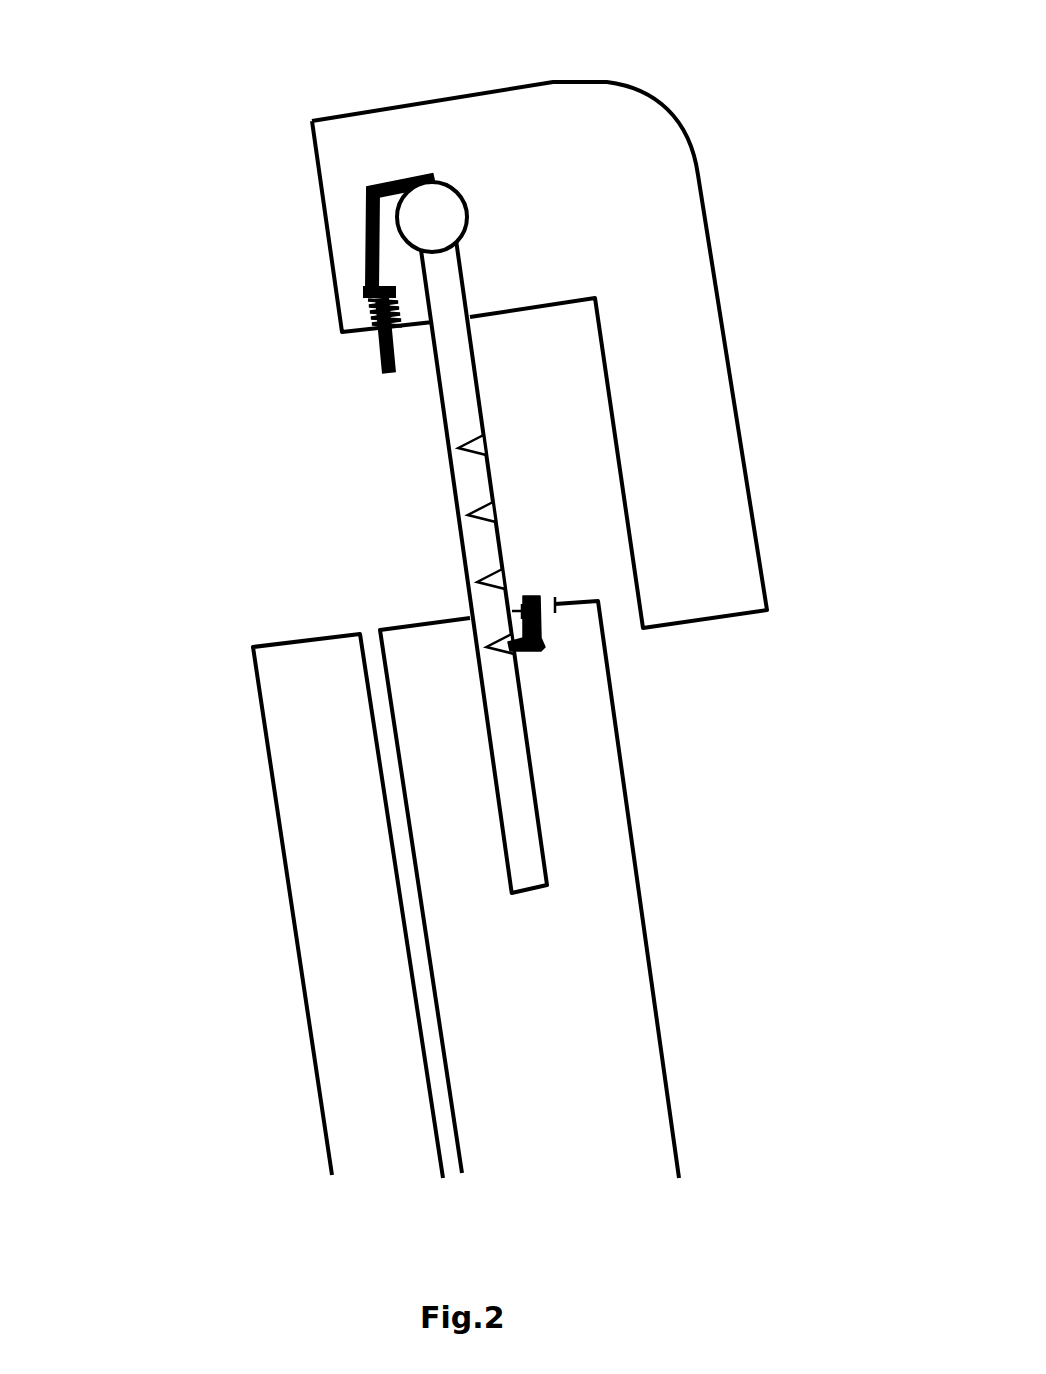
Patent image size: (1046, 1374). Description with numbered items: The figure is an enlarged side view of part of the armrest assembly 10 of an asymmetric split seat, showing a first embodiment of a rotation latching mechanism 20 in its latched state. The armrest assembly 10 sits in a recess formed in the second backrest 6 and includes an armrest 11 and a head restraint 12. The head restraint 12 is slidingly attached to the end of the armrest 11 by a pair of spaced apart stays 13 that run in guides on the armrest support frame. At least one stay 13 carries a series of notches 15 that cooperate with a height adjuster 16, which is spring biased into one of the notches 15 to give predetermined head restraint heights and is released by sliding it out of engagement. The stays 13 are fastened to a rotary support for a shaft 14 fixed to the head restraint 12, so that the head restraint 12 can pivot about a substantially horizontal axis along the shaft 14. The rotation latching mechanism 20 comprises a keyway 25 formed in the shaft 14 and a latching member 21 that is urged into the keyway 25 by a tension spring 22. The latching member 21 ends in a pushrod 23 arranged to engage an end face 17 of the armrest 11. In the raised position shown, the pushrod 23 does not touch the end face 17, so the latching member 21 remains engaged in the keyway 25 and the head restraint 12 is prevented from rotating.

The second backrest 6 is at (263, 757).
The armrest assembly 10 is at (716, 875).
The armrest 11 is at (627, 790).
The head restraint 12 is at (368, 110).
The stays 13 is at (441, 420).
The shaft 14 is at (467, 207).
The notches 15 is at (497, 517).
The height adjuster 16 is at (537, 594).
The end face 17 is at (403, 611).
The rotation latching mechanism 20 is at (266, 226).
The latching member 21 is at (367, 260).
The tension spring 22 is at (370, 315).
The pushrod 23 is at (380, 357).
The keyway 25 is at (440, 193).